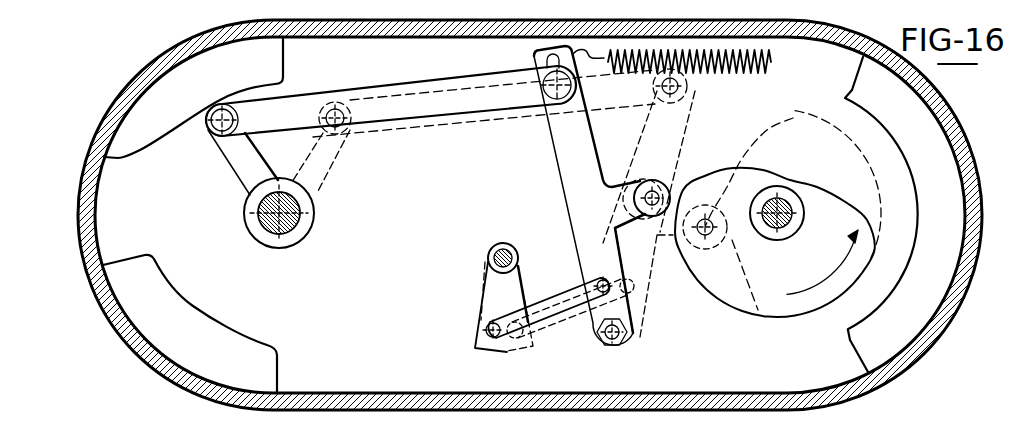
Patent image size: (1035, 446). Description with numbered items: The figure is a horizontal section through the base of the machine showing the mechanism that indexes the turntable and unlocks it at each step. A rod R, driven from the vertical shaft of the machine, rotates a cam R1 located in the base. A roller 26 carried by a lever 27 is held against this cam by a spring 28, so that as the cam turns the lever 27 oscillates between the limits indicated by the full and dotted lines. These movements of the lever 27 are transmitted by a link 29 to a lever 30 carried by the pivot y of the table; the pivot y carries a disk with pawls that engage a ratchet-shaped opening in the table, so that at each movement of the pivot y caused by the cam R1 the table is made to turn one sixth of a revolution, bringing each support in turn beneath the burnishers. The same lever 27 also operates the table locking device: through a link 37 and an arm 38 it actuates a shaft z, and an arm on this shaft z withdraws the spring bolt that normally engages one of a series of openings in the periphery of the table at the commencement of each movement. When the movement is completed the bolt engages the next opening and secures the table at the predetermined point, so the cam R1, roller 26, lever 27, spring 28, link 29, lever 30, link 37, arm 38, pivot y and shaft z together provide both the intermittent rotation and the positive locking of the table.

The roller 26 is at (707, 205).
The lever 27 is at (650, 155).
The spring 28 is at (771, 62).
The link 29 is at (450, 104).
The lever 30 is at (247, 157).
The link 37 is at (543, 312).
The arm 38 is at (487, 302).
The pivot y is at (245, 211).
The shaft z is at (489, 255).
The rod R is at (777, 241).
The cam R1 is at (777, 293).